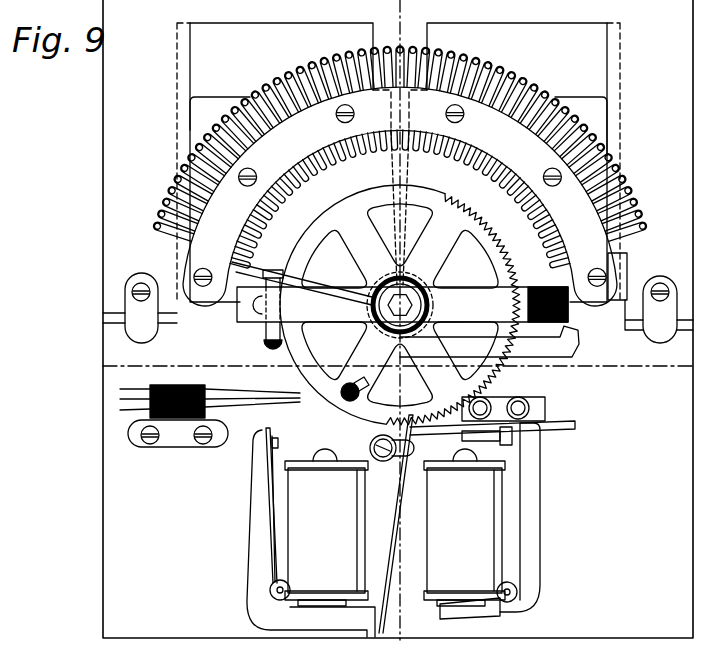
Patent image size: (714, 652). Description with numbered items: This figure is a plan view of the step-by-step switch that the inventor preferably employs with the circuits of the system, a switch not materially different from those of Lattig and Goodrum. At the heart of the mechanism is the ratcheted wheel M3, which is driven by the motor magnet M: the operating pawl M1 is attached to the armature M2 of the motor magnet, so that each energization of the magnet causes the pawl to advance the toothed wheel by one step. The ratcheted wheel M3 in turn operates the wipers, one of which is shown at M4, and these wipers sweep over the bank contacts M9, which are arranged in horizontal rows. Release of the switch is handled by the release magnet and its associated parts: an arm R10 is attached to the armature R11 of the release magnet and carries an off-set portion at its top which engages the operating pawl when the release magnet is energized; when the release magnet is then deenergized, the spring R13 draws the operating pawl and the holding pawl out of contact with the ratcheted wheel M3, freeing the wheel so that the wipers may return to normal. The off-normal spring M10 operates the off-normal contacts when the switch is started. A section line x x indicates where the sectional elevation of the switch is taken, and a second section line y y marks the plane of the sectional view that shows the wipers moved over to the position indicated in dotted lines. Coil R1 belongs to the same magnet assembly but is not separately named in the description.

The bank contacts M9 is at (400, 299).
The wiper M4 is at (272, 270).
The ratcheted wheel M3 is at (489, 362).
The operating pawl M1 is at (490, 402).
The armature of the motor magnet M2 is at (537, 569).
The motor magnet M is at (464, 527).
The off-normal spring M10 is at (227, 416).
The relay magnet coil R1 is at (326, 527).
The arm R10 is at (401, 524).
The armature of the release magnet R11 is at (250, 564).
The spring R13 is at (268, 489).
The section line x x is at (377, 368).
The section line y y is at (397, 320).